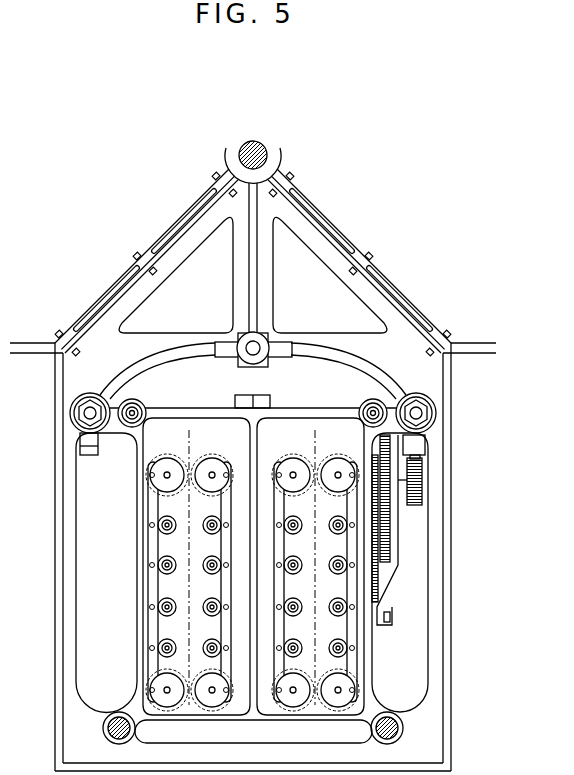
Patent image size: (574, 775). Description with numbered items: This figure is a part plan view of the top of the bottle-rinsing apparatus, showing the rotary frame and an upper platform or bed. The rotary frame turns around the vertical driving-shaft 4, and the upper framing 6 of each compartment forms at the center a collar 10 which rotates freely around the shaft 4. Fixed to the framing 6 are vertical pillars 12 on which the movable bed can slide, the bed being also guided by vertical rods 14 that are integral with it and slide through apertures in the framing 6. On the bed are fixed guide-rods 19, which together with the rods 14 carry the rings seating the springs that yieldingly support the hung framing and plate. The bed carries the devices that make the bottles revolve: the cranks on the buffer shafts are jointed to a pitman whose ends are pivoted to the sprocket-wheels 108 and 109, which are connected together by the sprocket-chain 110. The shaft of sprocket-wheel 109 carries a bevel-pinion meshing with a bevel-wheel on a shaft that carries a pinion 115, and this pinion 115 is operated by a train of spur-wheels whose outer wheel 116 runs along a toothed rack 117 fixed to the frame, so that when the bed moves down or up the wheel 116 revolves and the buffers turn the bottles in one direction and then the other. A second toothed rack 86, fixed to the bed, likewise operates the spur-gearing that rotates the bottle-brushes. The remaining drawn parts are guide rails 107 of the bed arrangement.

The vertical driving-shaft 4 is at (258, 150).
The collar 10 is at (276, 163).
The vertical pillar 12 is at (86, 417).
The guide-rod 19 is at (138, 408).
The toothed rack 86 is at (92, 455).
The upper framing 6 is at (77, 644).
The guide rail 107 is at (152, 592).
The sprocket-chain 110 is at (189, 612).
The sprocket-wheel 109 is at (176, 458).
The sprocket-wheel 108 is at (158, 703).
The vertical rod 14 is at (382, 744).
The pinion 115 is at (379, 449).
The spur-wheel 116 is at (415, 506).
The toothed rack 117 is at (420, 457).